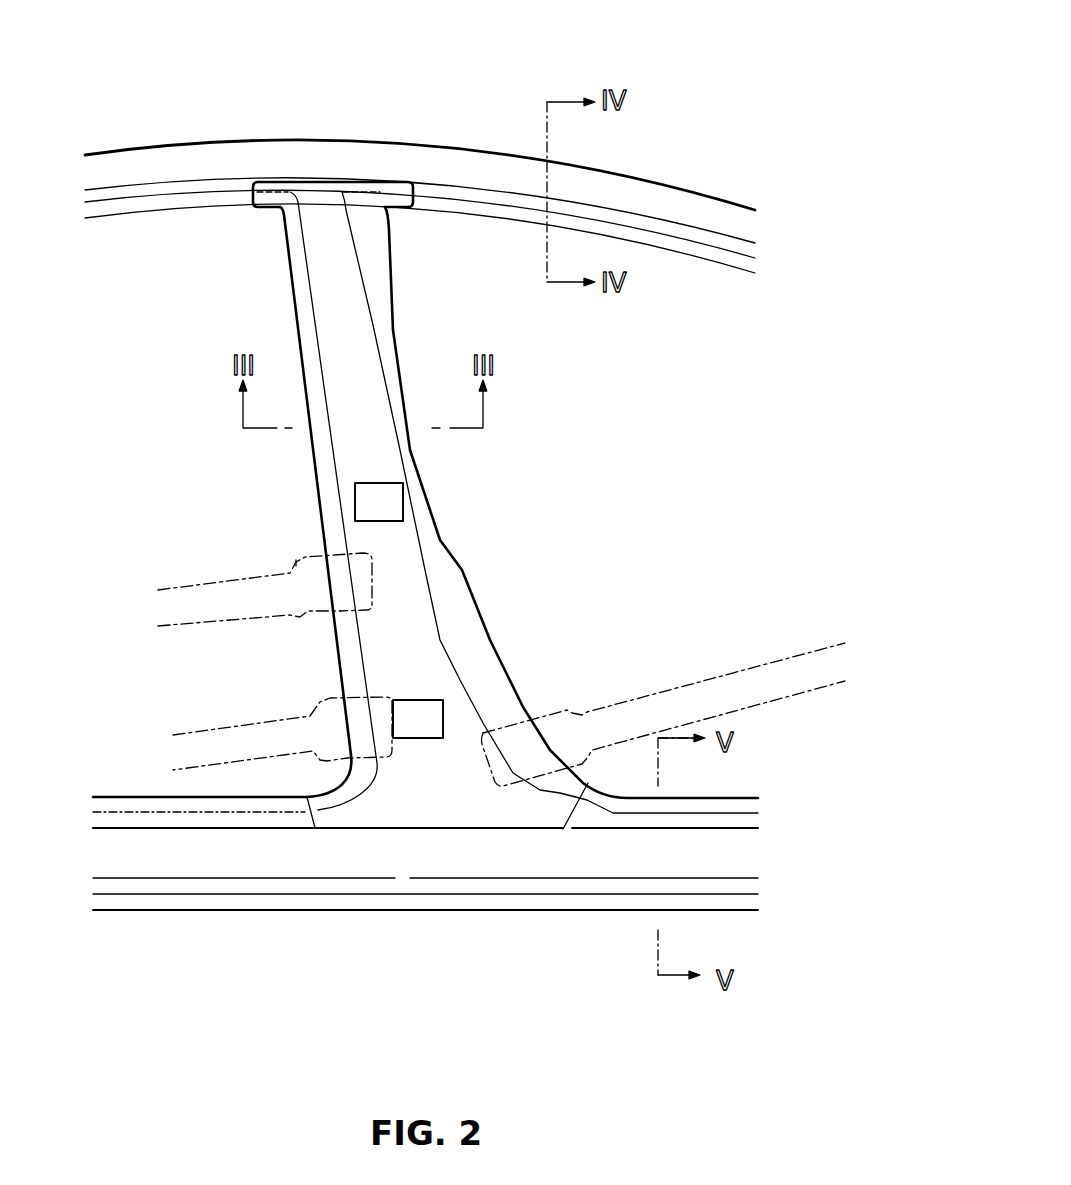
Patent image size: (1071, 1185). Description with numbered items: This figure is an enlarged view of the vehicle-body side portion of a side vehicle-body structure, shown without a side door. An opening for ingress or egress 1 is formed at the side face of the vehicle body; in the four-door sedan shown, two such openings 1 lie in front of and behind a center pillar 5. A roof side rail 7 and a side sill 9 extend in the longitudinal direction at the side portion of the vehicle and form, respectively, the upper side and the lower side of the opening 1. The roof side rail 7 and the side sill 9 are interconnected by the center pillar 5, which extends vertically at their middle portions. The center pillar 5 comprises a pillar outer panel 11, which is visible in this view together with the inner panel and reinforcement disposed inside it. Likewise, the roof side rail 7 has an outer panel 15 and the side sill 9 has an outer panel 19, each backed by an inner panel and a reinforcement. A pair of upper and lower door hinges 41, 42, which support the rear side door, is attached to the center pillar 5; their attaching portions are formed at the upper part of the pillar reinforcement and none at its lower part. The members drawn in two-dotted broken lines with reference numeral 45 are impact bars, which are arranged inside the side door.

The opening for ingress or egress 1 is at (158, 470).
The center pillar 5 is at (495, 559).
The roof side rail 7 is at (386, 132).
The side sill 9 is at (423, 950).
The pillar outer panel 11 is at (395, 637).
The outer panel 15 is at (182, 167).
The outer panel 19 is at (146, 850).
The upper door hinge 41 is at (393, 508).
The lower door hinge 42 is at (423, 712).
The impact bars 45 is at (217, 728).